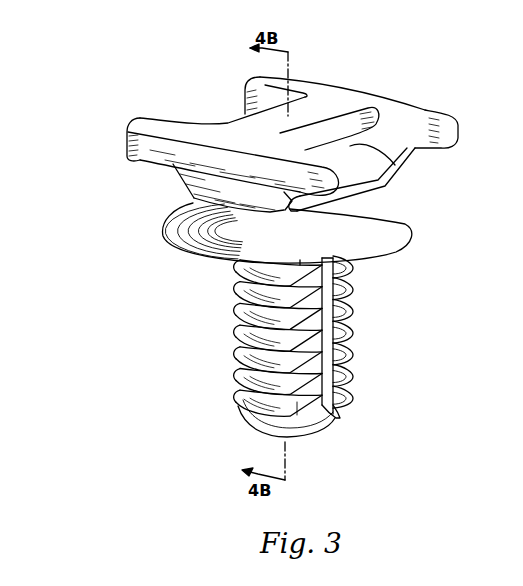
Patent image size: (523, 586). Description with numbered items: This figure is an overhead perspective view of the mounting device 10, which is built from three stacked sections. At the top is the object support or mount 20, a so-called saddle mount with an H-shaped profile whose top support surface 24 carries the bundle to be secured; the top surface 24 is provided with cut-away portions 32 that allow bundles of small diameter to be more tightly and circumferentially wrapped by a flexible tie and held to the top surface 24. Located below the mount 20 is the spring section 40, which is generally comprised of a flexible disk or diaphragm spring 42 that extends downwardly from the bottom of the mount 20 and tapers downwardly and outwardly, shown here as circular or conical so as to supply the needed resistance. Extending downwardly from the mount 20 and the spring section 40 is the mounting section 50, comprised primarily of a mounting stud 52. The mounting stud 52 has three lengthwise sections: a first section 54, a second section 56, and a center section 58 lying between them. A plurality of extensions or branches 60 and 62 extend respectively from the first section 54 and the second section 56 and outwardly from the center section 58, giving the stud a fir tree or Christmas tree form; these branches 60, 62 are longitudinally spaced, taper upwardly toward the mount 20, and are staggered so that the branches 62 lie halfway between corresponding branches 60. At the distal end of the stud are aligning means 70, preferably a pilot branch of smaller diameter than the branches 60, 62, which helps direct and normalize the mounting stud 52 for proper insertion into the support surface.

The mounting device 10 is at (275, 227).
The mount 20 is at (275, 123).
The top support surface 24 is at (450, 118).
The cut-away portion 32 is at (232, 108).
The spring section 40 is at (245, 233).
The diaphragm spring 42 is at (200, 228).
The mounting section 50 is at (255, 353).
The mounting stud 52 is at (345, 282).
The first section 54 is at (240, 390).
The second section 56 is at (340, 380).
The center section 58 is at (340, 418).
The branches 60 is at (240, 320).
The branches 62 is at (352, 355).
The aligning means 70 is at (262, 438).